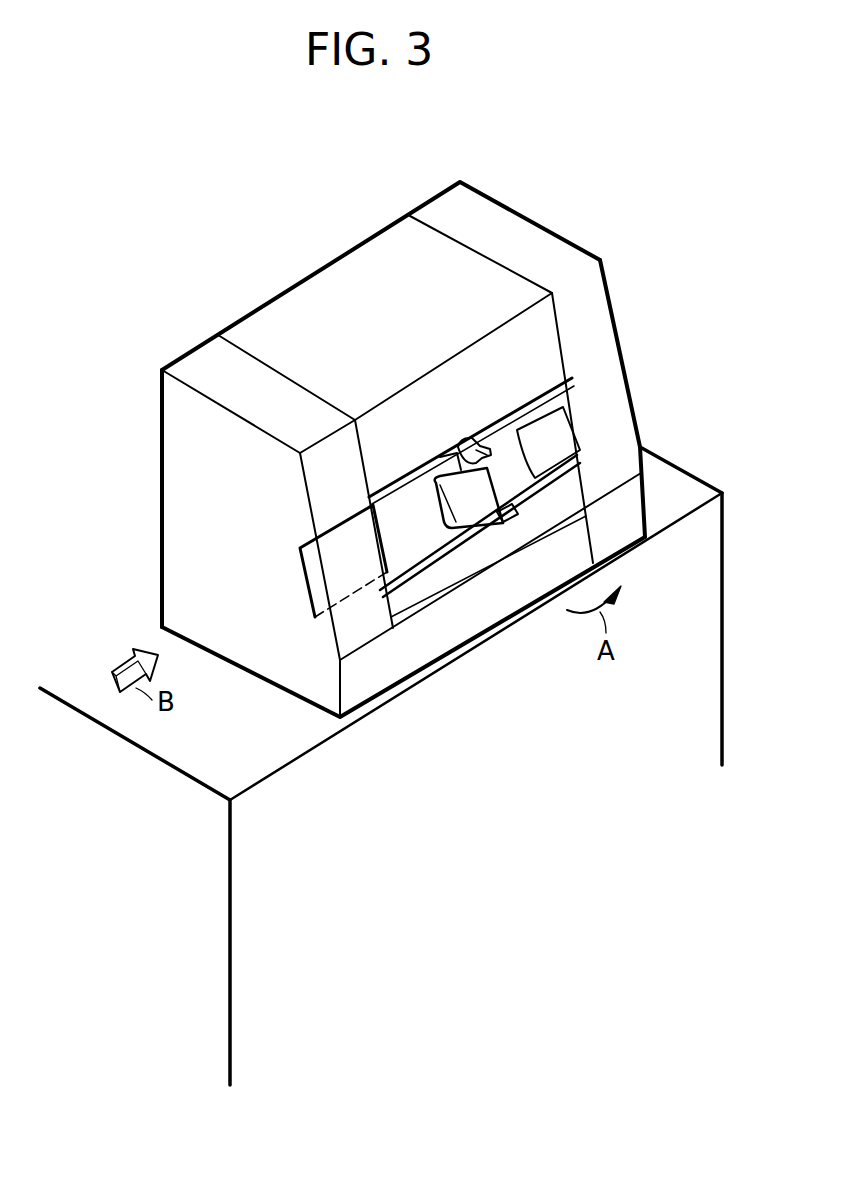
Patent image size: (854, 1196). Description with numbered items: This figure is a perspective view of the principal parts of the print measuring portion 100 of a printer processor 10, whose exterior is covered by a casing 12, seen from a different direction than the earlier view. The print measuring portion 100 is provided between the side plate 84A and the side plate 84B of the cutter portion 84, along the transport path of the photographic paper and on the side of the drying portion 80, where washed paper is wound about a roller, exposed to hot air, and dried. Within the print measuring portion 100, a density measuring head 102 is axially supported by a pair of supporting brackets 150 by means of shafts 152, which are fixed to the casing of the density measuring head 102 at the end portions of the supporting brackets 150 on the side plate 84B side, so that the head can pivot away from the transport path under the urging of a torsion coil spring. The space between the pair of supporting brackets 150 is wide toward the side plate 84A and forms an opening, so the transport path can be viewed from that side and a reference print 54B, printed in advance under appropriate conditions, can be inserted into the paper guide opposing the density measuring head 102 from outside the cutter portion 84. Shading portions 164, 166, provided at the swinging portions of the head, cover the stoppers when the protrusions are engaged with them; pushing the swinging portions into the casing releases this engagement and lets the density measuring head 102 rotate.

The printer processor 10 is at (108, 312).
The casing 12 is at (167, 737).
The drying portion 80 is at (490, 790).
The cutter portion 84 is at (566, 203).
The side plate 84A is at (187, 497).
The side plate 84B is at (572, 262).
The reference print 54B is at (306, 601).
The print measuring portion 100 is at (417, 546).
The density measuring head 102 is at (474, 513).
The supporting brackets 150 is at (388, 488).
The shafts 152 is at (582, 453).
The shading portion 164 is at (495, 514).
The shading portion 166 is at (470, 433).